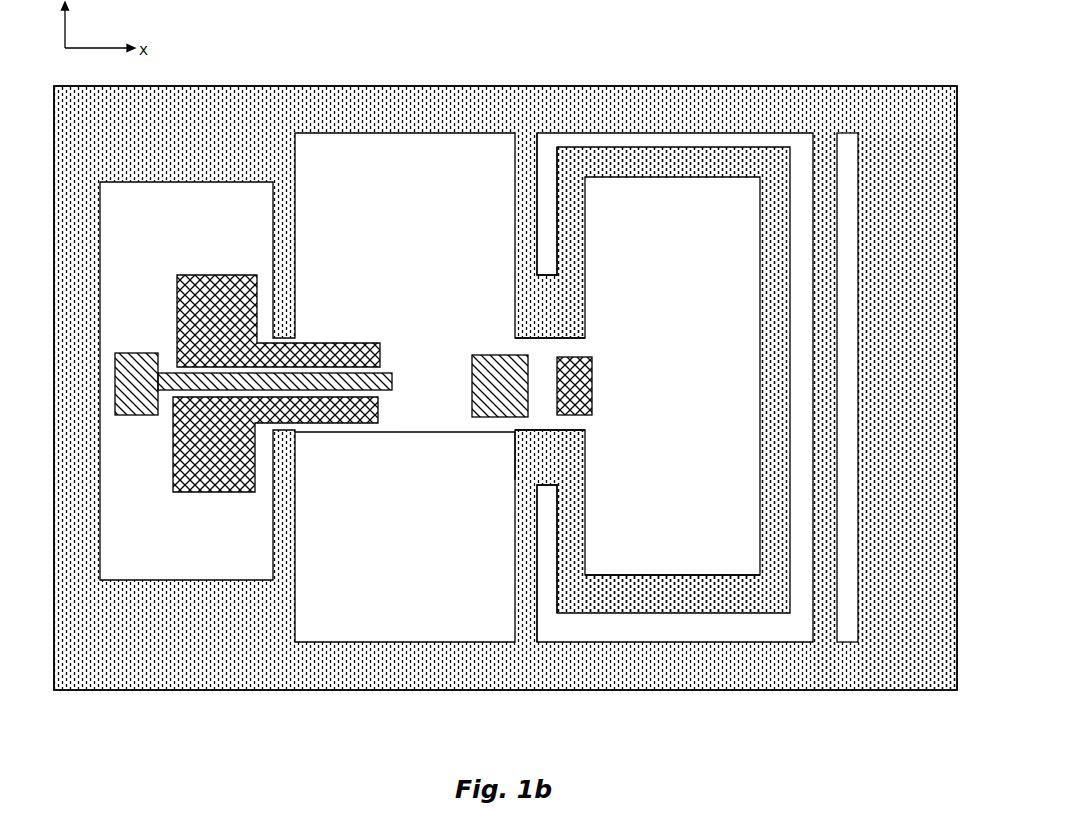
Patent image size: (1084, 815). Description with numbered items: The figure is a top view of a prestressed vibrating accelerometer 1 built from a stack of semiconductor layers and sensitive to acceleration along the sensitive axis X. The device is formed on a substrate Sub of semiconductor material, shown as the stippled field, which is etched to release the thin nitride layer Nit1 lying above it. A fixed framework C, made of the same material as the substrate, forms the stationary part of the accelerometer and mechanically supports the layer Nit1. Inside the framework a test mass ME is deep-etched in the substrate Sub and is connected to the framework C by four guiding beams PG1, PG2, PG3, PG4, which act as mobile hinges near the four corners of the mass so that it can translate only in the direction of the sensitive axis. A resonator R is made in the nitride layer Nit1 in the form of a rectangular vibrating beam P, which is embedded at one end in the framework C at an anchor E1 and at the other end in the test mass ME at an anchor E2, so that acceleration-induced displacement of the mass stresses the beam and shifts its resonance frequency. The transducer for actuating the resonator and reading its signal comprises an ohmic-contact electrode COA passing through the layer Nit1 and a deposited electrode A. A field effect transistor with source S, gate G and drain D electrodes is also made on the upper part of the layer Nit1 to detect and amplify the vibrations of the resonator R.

The vibrating accelerometer 1 is at (917, 65).
The substrate Sub is at (240, 104).
The resonator R is at (410, 355).
The guiding beam PG1 is at (545, 272).
The guiding beam PG2 is at (822, 262).
The guiding beam PG3 is at (527, 557).
The guiding beam PG4 is at (827, 605).
The electrode A is at (488, 353).
The electrode COA is at (585, 345).
The vibrating beam P is at (687, 177).
The gate G is at (122, 353).
The source S is at (233, 318).
The drain D is at (253, 477).
The anchor E1 is at (300, 440).
The anchor E2 is at (513, 433).
The nitride layer Nit1 is at (628, 520).
The test mass ME is at (715, 585).
The fixed framework C is at (917, 608).